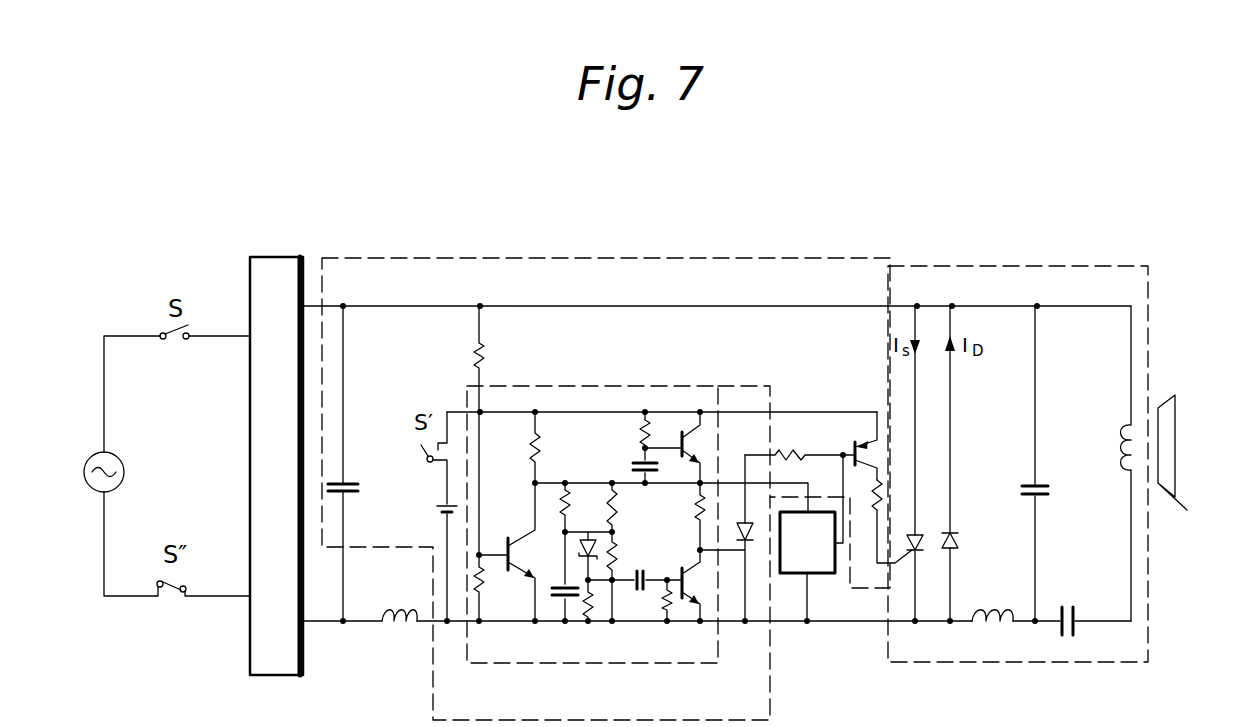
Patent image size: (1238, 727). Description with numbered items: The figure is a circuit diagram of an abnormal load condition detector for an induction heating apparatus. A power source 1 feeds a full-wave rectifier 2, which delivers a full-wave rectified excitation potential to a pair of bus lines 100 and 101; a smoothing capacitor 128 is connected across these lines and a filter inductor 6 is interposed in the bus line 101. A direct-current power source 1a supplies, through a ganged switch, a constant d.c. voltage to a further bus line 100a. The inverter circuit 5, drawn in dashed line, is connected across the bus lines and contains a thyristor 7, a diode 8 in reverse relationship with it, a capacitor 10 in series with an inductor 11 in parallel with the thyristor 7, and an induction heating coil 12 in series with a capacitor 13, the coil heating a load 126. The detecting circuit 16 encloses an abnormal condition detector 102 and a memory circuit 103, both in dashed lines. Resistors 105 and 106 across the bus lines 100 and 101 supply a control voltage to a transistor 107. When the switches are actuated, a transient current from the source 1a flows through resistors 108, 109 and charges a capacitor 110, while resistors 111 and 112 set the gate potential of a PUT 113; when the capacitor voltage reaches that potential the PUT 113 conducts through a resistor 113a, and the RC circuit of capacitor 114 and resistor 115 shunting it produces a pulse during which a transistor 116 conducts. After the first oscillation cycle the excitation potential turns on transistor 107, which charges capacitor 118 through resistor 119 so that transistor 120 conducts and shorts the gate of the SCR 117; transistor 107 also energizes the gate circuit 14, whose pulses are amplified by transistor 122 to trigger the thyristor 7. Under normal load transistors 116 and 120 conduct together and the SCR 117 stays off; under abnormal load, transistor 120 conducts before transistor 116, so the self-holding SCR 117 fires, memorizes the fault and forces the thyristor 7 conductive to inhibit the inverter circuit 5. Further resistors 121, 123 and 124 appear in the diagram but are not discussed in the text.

The power source 1 is at (106, 460).
The direct-current power source 1a is at (435, 511).
The full-wave rectifier 2 is at (276, 466).
The inverter circuit 5 is at (1004, 266).
The filter inductor 6 is at (400, 615).
The thyristor 7 is at (908, 528).
The diode 8 is at (949, 527).
The capacitor 10 is at (1040, 485).
The inductor 11 is at (995, 627).
The induction heating coil 12 is at (1124, 438).
The capacitor 13 is at (1072, 606).
The gate circuit 14 is at (826, 578).
The abnormal load condition detecting circuit 16 is at (630, 258).
The bus line 100 is at (392, 306).
The bus line 100a is at (556, 412).
The bus line 101 is at (358, 624).
The abnormal condition detector 102 is at (603, 386).
The memory circuit 103 is at (733, 386).
The resistor 105 is at (488, 357).
The resistor 106 is at (484, 580).
The transistor 107 is at (515, 553).
The resistor 108 is at (532, 457).
The resistor 109 is at (617, 459).
The capacitor 110 is at (557, 605).
The resistor 111 is at (618, 508).
The resistor 112 is at (617, 562).
The PUT 113 is at (588, 532).
The resistor 113a is at (598, 606).
The capacitor 114 is at (638, 592).
The resistor 115 is at (669, 603).
The transistor 116 is at (688, 583).
The SCR 117 is at (753, 524).
The capacitor 118 is at (632, 468).
The resistor 119 is at (638, 431).
The transistor 120 is at (693, 444).
The resistor 121 is at (696, 516).
The transistor 122 is at (853, 440).
The resistor 123 is at (790, 450).
The resistor 124 is at (882, 490).
The load 126 is at (1190, 452).
The smoothing capacitor 128 is at (350, 482).